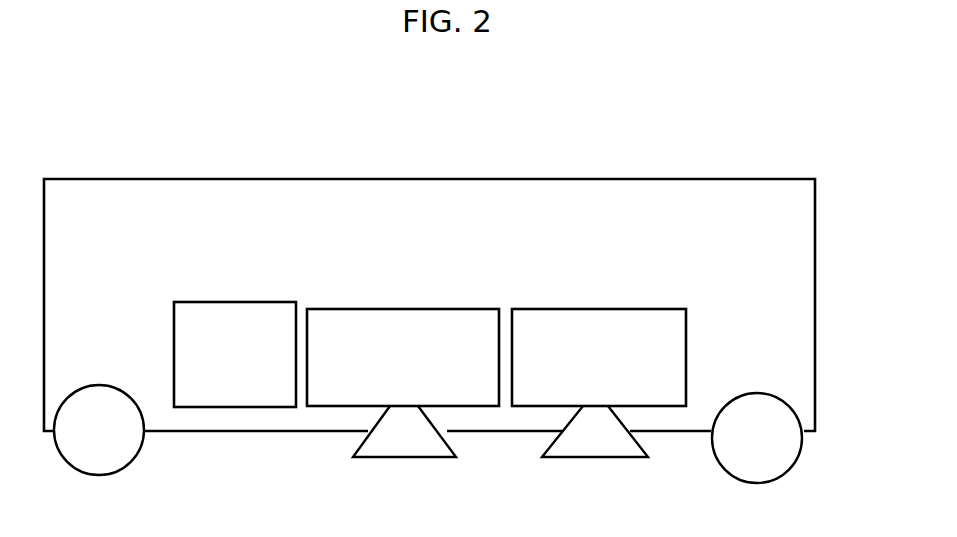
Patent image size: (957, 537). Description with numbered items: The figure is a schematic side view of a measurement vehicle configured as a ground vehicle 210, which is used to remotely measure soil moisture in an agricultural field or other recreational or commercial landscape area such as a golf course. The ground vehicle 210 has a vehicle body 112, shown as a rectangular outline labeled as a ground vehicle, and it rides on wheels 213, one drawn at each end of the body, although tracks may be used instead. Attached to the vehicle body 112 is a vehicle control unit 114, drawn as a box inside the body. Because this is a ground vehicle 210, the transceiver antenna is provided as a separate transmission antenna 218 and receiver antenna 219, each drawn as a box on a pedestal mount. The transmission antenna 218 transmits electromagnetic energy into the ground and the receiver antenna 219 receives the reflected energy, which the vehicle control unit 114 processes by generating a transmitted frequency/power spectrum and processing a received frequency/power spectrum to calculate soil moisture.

The vehicle body 112 is at (429, 261).
The ground vehicle 210 is at (668, 163).
The vehicle control unit 114 is at (190, 301).
The transmission antenna 218 is at (448, 309).
The receiver antenna 219 is at (648, 309).
The wheels 213 is at (103, 386).